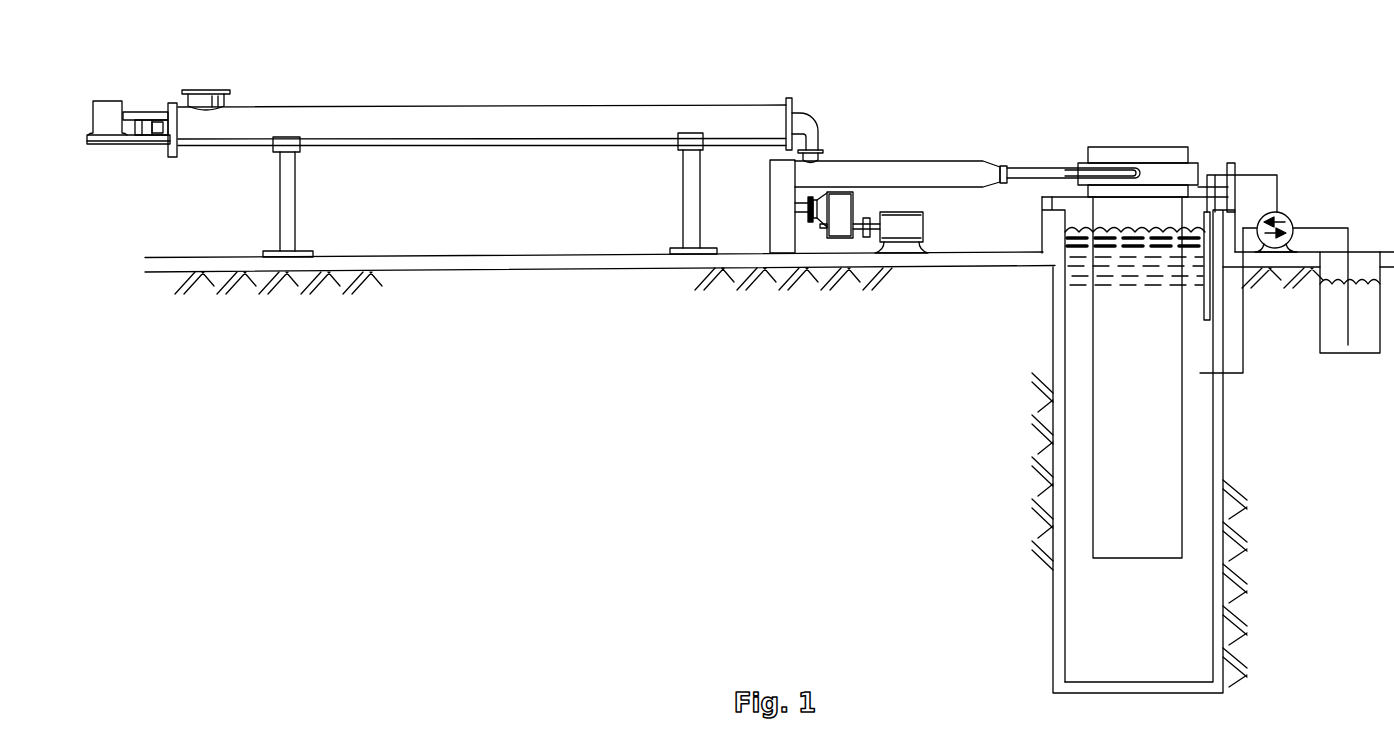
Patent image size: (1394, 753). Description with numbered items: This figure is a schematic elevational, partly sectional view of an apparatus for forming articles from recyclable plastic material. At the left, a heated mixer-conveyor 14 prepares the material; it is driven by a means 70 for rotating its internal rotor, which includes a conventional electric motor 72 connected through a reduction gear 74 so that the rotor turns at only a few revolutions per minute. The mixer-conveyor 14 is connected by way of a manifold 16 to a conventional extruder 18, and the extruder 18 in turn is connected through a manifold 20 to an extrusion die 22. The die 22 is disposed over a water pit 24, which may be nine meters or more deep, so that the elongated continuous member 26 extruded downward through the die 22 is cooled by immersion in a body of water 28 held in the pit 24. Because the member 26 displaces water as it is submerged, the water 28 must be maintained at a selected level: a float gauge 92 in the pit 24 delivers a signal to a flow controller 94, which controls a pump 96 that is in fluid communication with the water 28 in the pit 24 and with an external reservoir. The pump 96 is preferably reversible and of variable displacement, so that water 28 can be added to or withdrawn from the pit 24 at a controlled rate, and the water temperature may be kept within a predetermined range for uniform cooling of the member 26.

The heated mixer-conveyor 14 is at (520, 95).
The manifold 16 is at (807, 117).
The extruder 18 is at (905, 150).
The manifold 20 is at (1025, 167).
The extrusion die 22 is at (1140, 140).
The water pit 24 is at (1230, 437).
The elongated continuous member 26 is at (1124, 445).
The water 28 is at (1120, 231).
The means for rotating the rotor 70 is at (133, 97).
The electric motor 72 is at (112, 106).
The reduction gear 74 is at (158, 137).
The float gauge 92 is at (1205, 293).
The flow controller 94 is at (1232, 163).
The pump 96 is at (1290, 214).